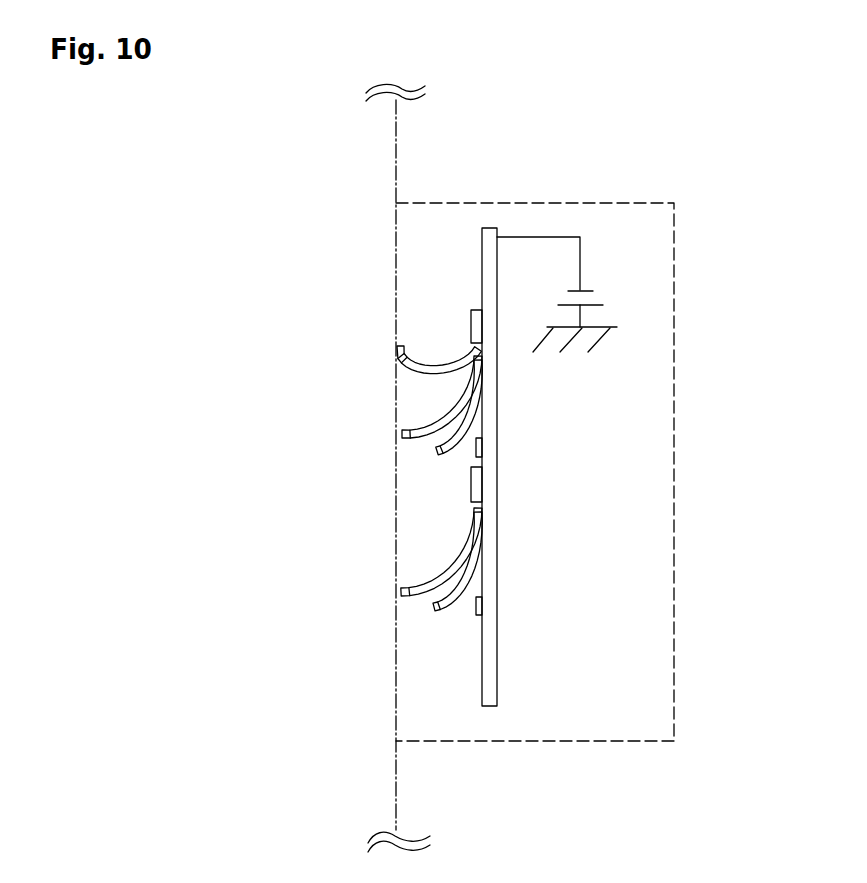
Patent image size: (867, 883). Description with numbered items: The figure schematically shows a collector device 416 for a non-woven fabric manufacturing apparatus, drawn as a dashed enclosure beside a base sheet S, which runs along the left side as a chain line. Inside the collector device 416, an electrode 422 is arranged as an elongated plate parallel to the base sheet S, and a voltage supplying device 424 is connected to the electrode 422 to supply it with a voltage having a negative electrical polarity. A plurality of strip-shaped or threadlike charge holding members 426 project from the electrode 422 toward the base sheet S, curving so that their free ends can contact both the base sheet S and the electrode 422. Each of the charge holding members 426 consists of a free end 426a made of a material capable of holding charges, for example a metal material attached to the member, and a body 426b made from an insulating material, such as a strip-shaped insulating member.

The base sheet S is at (395, 161).
The collector device 416 is at (674, 462).
The electrode 422 is at (497, 583).
The voltage supplying device 424 is at (575, 350).
The charge holding members 426 is at (272, 333).
The free ends 426a is at (395, 358).
The bodies 426b is at (421, 378).